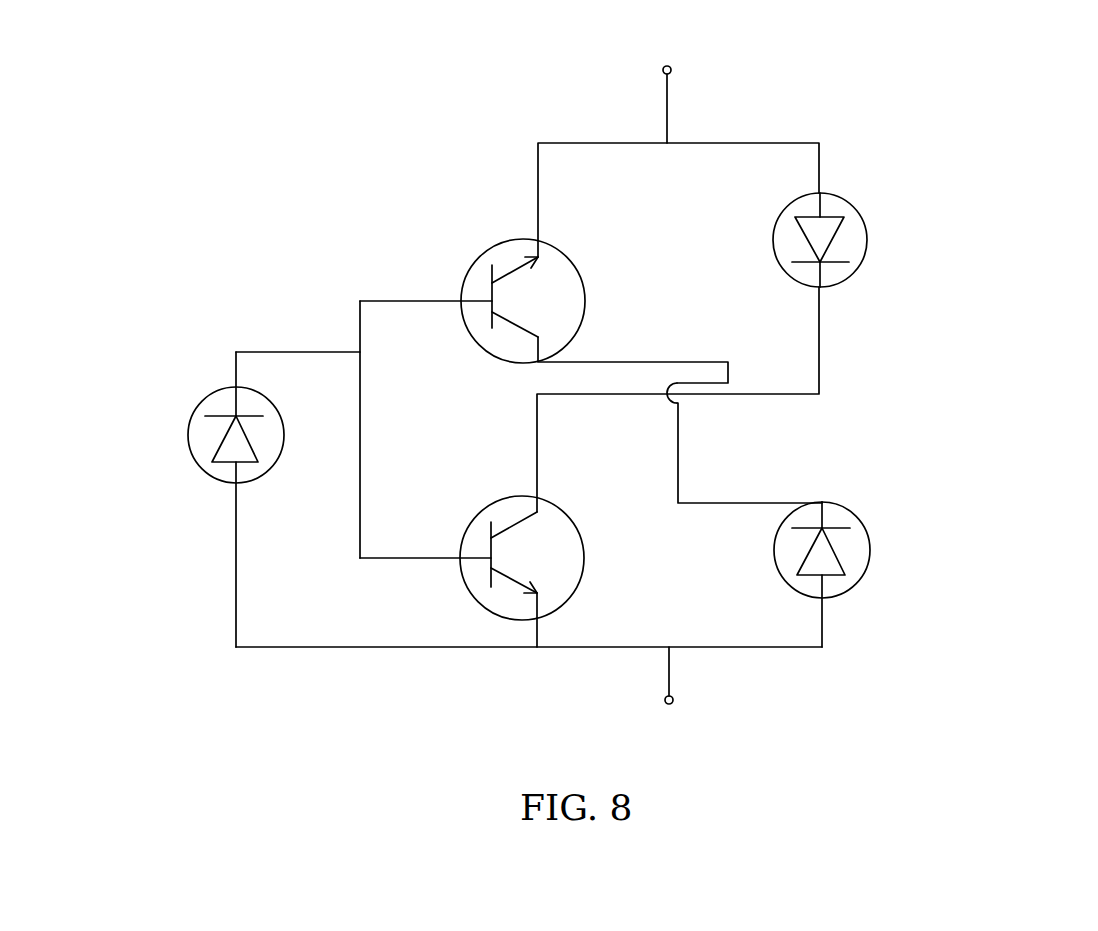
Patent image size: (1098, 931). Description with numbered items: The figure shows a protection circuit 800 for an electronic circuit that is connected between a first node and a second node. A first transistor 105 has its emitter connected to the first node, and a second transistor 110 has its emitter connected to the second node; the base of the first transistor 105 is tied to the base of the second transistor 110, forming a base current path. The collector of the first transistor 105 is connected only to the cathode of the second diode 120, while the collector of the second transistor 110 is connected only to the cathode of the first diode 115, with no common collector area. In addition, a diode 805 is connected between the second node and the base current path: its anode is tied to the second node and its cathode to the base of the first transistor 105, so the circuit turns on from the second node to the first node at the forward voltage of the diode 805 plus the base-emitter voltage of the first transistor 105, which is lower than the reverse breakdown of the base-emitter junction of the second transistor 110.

The protection circuit 800 is at (962, 155).
The first transistor 105 is at (560, 243).
The second transistor 110 is at (585, 550).
The first diode 115 is at (842, 200).
The second diode 120 is at (853, 518).
The diode 805 is at (188, 433).